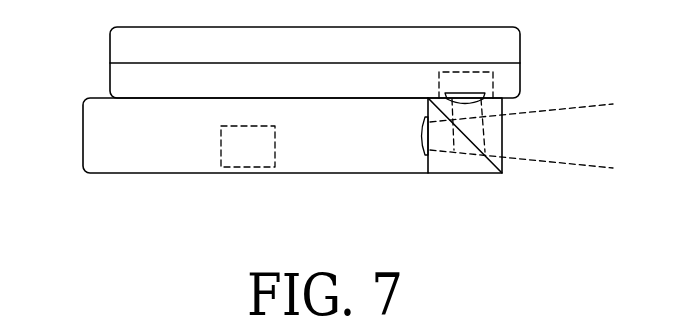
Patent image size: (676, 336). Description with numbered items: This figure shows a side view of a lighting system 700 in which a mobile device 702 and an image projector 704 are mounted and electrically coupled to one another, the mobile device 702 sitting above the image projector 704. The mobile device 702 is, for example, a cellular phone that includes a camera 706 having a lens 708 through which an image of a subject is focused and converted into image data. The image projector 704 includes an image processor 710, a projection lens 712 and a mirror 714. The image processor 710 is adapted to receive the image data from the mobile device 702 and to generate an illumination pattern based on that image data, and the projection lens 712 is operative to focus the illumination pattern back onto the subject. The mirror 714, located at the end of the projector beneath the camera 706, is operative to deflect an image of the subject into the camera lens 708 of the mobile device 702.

The lighting system 700 is at (315, 146).
The mobile device 702 is at (138, 48).
The image projector 704 is at (107, 135).
The camera 706 is at (474, 80).
The lens 708 is at (447, 92).
The image processor 710 is at (257, 143).
The projection lens 712 is at (422, 128).
The mirror 714 is at (505, 157).